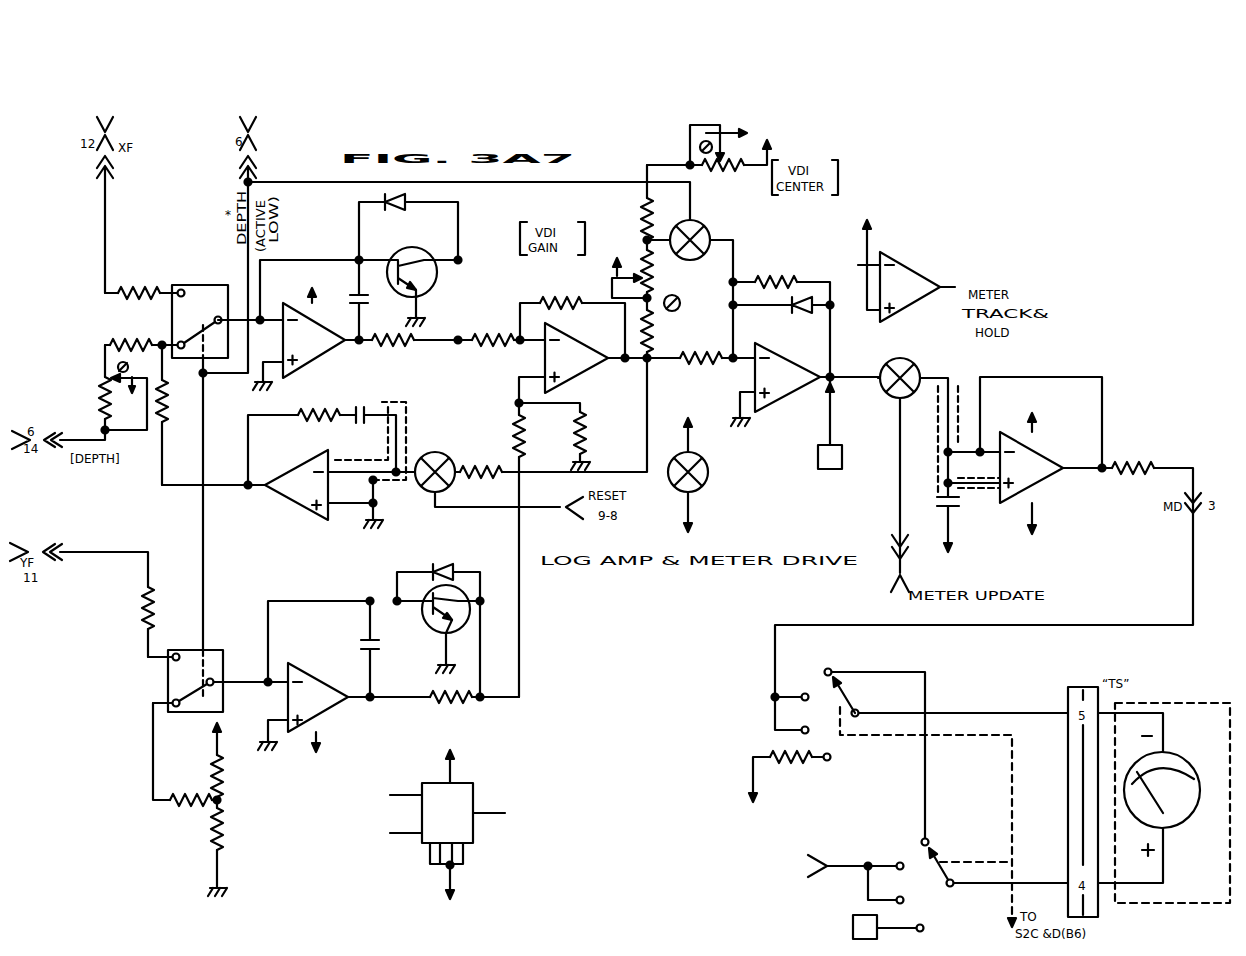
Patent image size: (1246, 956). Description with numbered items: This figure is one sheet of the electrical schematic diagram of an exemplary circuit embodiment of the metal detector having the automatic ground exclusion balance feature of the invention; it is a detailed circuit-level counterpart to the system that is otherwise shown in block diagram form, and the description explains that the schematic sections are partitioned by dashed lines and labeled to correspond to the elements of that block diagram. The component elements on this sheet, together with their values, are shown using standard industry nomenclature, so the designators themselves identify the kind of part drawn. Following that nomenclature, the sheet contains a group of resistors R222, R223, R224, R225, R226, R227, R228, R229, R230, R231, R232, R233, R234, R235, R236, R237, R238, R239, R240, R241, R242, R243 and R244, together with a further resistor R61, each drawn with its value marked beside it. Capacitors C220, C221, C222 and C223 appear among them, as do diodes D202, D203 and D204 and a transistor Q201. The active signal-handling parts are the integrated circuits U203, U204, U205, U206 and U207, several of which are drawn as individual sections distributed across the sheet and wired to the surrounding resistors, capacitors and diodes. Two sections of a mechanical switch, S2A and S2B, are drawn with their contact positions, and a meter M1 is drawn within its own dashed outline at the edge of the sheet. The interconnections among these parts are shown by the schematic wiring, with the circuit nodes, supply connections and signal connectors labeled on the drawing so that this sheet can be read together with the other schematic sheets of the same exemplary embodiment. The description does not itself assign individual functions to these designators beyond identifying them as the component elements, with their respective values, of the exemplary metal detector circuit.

The trim potentiometer 100K R222 is at (103, 392).
The resistor 22K R223 is at (141, 331).
The resistor 39.2K R224 is at (141, 281).
The resistor 4.7K R225 is at (408, 352).
The resistor 10K R226 is at (501, 359).
The resistor 100K R227 is at (572, 313).
The VDI center potentiometer 200K R228 is at (717, 155).
The resistor 330K R229 is at (628, 207).
The potentiometer 200K R230 is at (646, 275).
The resistor 100K R231 is at (781, 305).
The resistor 68K R232 is at (663, 334).
The resistor 44.2K R233 is at (690, 380).
The resistor 100K R234 is at (202, 415).
The resistor 100 ohm R235 is at (302, 436).
The resistor 1K R236 is at (553, 418).
The resistor 10K R237 is at (536, 550).
The resistor 100K R238 is at (569, 437).
The resistor 3.9K R239 is at (984, 563).
The resistor 39.2K R240 is at (168, 622).
The resistor 4.7K R241 is at (444, 711).
The resistor 2.2M R242 is at (185, 754).
The resistor 330K R243 is at (236, 753).
The resistor 4.7K R244 is at (231, 860).
The resistor 4.99K R61 is at (790, 795).
The capacitor 100pF C220 is at (360, 300).
The capacitor 1.0 uF C221 is at (373, 429).
The capacitor 100pF C222 is at (391, 649).
The hold capacitor 1.0 uF C223 is at (961, 533).
The diode 1N6099 D202 is at (408, 223).
The diode 1N4148 D203 is at (781, 326).
The diode 1N6099 D204 is at (450, 575).
The dual transistor MP310 Q201 is at (419, 455).
The CD4053 analog multiplexer U203 is at (337, 596).
The LF442 dual op amp U204 is at (294, 522).
The TL062 dual op amp U205 is at (642, 455).
The LM324 quad op amp U206 is at (742, 332).
The CD4016 quad analog switch U207 is at (703, 400).
The switch section S2A is at (920, 789).
The switch section S2B is at (929, 882).
The meter 1mA M1 is at (1164, 803).